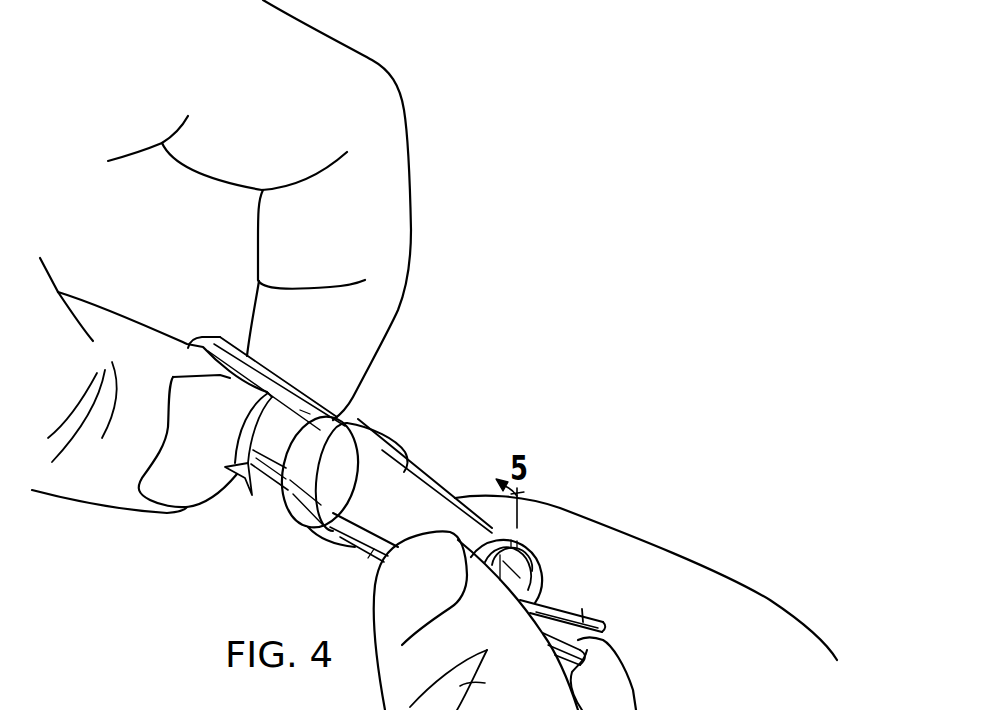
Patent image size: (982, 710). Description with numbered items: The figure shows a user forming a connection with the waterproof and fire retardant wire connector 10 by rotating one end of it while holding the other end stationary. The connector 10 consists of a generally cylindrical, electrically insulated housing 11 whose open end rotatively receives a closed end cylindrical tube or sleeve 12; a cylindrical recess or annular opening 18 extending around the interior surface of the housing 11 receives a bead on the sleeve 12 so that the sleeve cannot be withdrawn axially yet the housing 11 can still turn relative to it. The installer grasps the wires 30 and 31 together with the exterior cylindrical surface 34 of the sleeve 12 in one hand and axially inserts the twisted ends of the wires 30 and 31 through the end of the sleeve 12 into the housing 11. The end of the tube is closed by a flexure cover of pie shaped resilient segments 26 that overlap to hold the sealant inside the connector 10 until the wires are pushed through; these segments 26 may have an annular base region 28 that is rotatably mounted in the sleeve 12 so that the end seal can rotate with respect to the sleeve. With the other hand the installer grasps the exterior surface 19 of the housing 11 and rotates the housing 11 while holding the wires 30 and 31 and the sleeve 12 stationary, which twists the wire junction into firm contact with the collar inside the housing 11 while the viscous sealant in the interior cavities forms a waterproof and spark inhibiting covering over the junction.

The wire connector 10 is at (446, 405).
The housing 11 is at (205, 340).
The sleeve 12 is at (417, 490).
The annular recess 18 is at (306, 412).
The exterior surface 19 is at (352, 426).
The resilient segments 26 is at (508, 557).
The annular base region 28 is at (527, 528).
The wire 30 is at (601, 618).
The wire 31 is at (588, 652).
The exterior cylindrical surface 34 is at (371, 553).